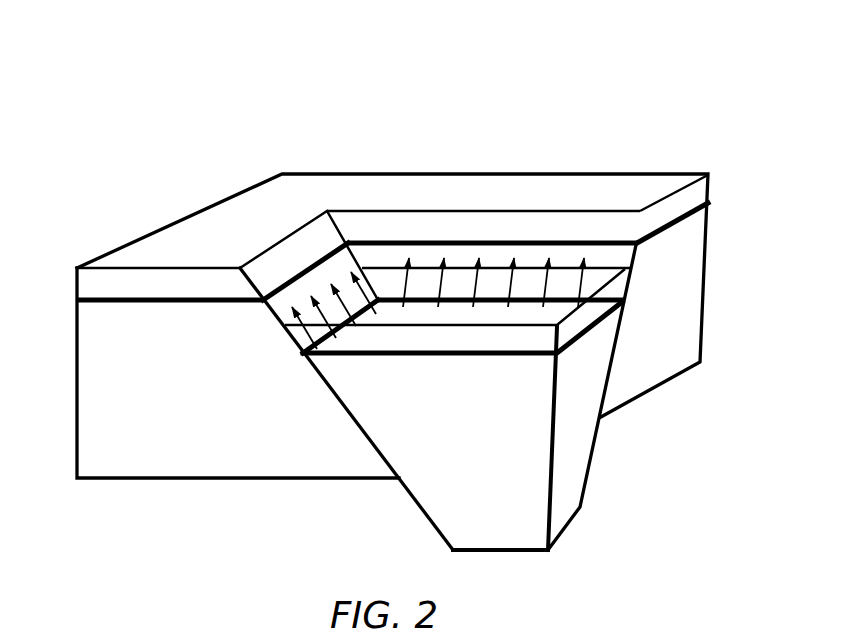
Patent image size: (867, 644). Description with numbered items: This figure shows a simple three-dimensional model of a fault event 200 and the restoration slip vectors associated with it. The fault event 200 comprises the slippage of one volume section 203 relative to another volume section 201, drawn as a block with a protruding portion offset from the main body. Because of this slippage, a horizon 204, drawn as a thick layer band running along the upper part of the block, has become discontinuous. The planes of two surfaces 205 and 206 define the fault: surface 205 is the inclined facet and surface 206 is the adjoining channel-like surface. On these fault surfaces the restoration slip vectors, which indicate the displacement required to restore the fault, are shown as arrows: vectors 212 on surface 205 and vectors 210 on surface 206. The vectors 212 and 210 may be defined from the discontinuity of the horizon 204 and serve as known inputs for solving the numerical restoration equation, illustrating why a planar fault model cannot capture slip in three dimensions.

The fault event 200 is at (739, 111).
The volume section 201 is at (677, 365).
The volume section 203 is at (560, 522).
The horizon 204 is at (708, 205).
The surface 205 is at (317, 244).
The surface 206 is at (447, 228).
The vectors 210 is at (594, 248).
The vectors 212 is at (307, 300).